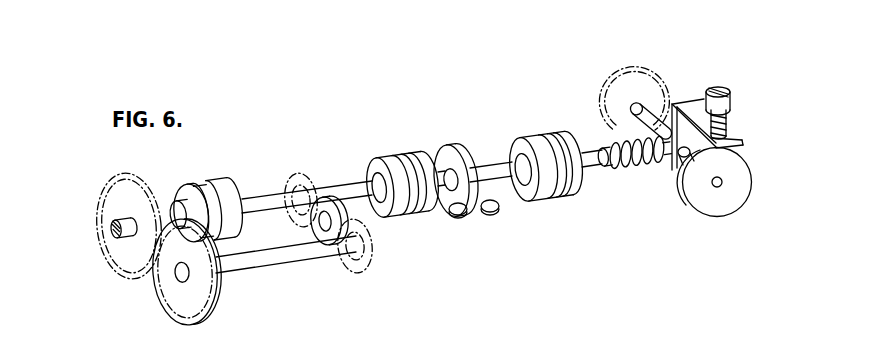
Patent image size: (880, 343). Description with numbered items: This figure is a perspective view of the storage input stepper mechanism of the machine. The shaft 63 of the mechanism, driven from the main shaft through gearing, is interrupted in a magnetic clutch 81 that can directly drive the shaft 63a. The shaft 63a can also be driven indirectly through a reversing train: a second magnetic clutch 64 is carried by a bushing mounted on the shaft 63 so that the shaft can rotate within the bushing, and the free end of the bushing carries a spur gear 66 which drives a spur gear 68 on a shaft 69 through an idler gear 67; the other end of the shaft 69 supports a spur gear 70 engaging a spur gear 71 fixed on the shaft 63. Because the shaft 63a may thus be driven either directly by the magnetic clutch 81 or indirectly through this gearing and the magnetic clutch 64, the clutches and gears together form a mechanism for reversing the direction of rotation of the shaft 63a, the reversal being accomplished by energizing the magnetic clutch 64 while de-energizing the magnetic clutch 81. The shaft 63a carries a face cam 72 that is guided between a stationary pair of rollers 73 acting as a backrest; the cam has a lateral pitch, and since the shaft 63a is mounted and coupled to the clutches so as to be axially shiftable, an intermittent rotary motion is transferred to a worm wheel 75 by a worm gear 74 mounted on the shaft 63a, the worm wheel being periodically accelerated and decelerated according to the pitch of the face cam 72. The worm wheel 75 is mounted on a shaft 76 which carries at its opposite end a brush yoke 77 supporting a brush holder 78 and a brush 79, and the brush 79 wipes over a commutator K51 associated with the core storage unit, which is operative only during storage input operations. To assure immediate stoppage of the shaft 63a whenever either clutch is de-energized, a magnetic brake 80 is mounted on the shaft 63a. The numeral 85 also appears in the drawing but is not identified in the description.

The shaft 63 is at (113, 238).
The shaft 63a is at (272, 197).
The magnetic clutch 64 is at (418, 156).
The spur gear 66 is at (307, 173).
The idler gear 67 is at (333, 197).
The spur gear 68 is at (362, 273).
The shaft 69 is at (273, 265).
The spur gear 70 is at (169, 315).
The spur gear 71 is at (114, 184).
The face cam 72 is at (463, 152).
The rollers 73 is at (460, 216).
The worm gear 74 is at (626, 178).
The worm wheel 75 is at (641, 78).
The shaft 76 is at (656, 110).
The brush yoke 77 is at (696, 102).
The brush holder 78 is at (731, 100).
The brush 79 is at (685, 189).
The magnetic brake 80 is at (556, 137).
The magnetic clutch 81 is at (223, 183).
The commutator K51 is at (726, 203).
The element 85 is at (658, 333).